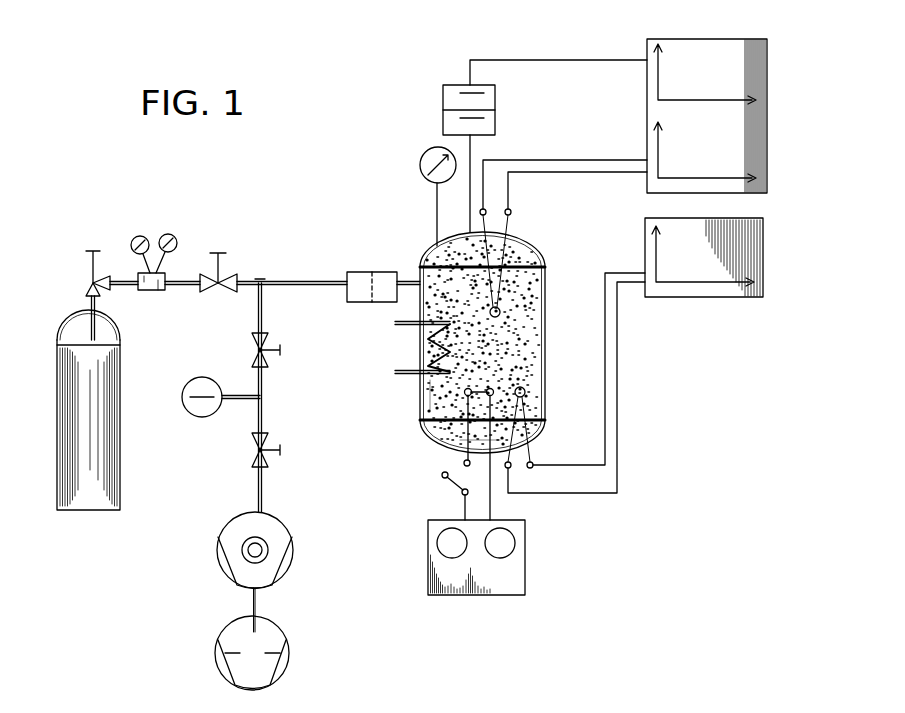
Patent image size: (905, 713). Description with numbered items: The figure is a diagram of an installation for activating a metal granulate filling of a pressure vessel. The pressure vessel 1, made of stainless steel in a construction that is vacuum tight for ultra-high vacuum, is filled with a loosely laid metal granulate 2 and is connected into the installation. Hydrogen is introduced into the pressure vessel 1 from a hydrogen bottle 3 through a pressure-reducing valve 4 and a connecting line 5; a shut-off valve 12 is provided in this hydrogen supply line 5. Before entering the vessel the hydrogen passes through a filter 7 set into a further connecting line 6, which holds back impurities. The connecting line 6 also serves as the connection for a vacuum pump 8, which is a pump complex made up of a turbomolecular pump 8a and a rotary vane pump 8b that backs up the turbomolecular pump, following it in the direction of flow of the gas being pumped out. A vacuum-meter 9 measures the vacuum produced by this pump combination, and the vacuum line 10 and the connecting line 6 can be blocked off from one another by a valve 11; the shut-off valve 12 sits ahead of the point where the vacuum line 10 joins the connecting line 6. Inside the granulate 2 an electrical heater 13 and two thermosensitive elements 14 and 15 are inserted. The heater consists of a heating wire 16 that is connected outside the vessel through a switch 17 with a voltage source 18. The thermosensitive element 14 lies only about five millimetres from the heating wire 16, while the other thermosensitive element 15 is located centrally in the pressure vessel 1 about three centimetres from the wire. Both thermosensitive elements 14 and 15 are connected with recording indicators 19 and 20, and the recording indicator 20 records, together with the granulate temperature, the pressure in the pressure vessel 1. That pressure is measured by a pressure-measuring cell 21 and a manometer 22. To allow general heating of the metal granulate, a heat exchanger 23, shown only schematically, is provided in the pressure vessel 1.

The pressure vessel 1 is at (525, 245).
The metal granulate 2 is at (440, 400).
The hydrogen bottle 3 is at (100, 410).
The pressure-reducing valve 4 is at (150, 290).
The connecting line 5 is at (183, 283).
The connecting line 6 is at (266, 283).
The filter 7 is at (372, 286).
The vacuum pump 8 is at (252, 601).
The turbomolecular pump 8a is at (222, 560).
The rotary vane pump 8b is at (228, 640).
The vacuum-meter 9 is at (184, 386).
The vacuum line 10 is at (264, 388).
The valve 11 is at (268, 342).
The shut-off valve 12 is at (226, 280).
The electrical heater 13 is at (460, 440).
The thermosensitive element 14 is at (526, 398).
The thermosensitive element 15 is at (502, 312).
The heating wire 16 is at (485, 386).
The switch 17 is at (456, 487).
The voltage source 18 is at (508, 570).
The recording indicator 19 is at (680, 288).
The recording indicator 20 is at (656, 40).
The pressure-measuring cell 21 is at (446, 90).
The manometer 22 is at (432, 152).
The heat exchanger 23 is at (410, 372).